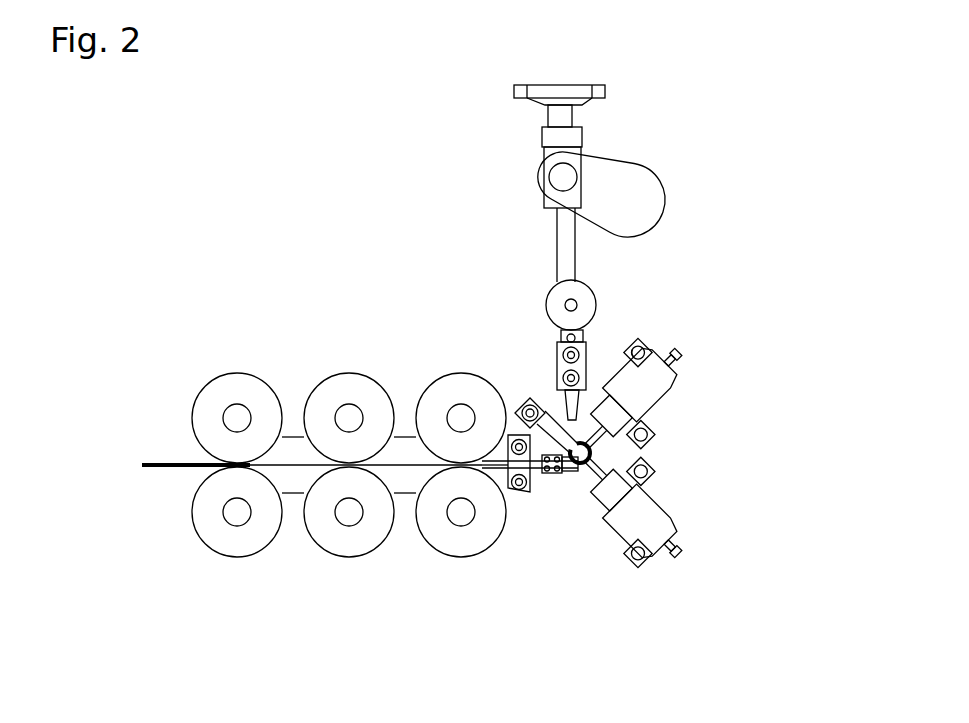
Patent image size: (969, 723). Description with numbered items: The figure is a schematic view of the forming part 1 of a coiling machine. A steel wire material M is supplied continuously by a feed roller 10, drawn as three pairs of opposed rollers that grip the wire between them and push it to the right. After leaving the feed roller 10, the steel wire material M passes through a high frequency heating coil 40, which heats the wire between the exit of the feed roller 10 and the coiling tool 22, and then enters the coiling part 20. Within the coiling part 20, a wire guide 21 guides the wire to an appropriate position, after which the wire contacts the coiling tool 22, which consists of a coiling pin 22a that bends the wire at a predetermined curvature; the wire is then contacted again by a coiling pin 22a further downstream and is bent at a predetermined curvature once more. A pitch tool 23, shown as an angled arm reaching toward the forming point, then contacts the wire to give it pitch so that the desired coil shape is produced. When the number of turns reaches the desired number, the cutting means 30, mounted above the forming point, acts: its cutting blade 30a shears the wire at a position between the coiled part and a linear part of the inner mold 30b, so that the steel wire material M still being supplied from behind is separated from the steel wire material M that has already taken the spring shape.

The forming part of coiling apparatus 1 is at (277, 640).
The feed roller 10 is at (507, 562).
The coiling part 20 is at (602, 580).
The wire guide 21 is at (573, 473).
The coiling tool 22 is at (649, 452).
The coiling pin 22a is at (588, 432).
The pitch tool 23 is at (533, 406).
The cutting means 30 is at (538, 368).
The cutting blade 30a is at (566, 398).
The inner mold 30b is at (578, 468).
The high frequency heating coil 40 is at (530, 484).
The steel wire material M is at (166, 450).